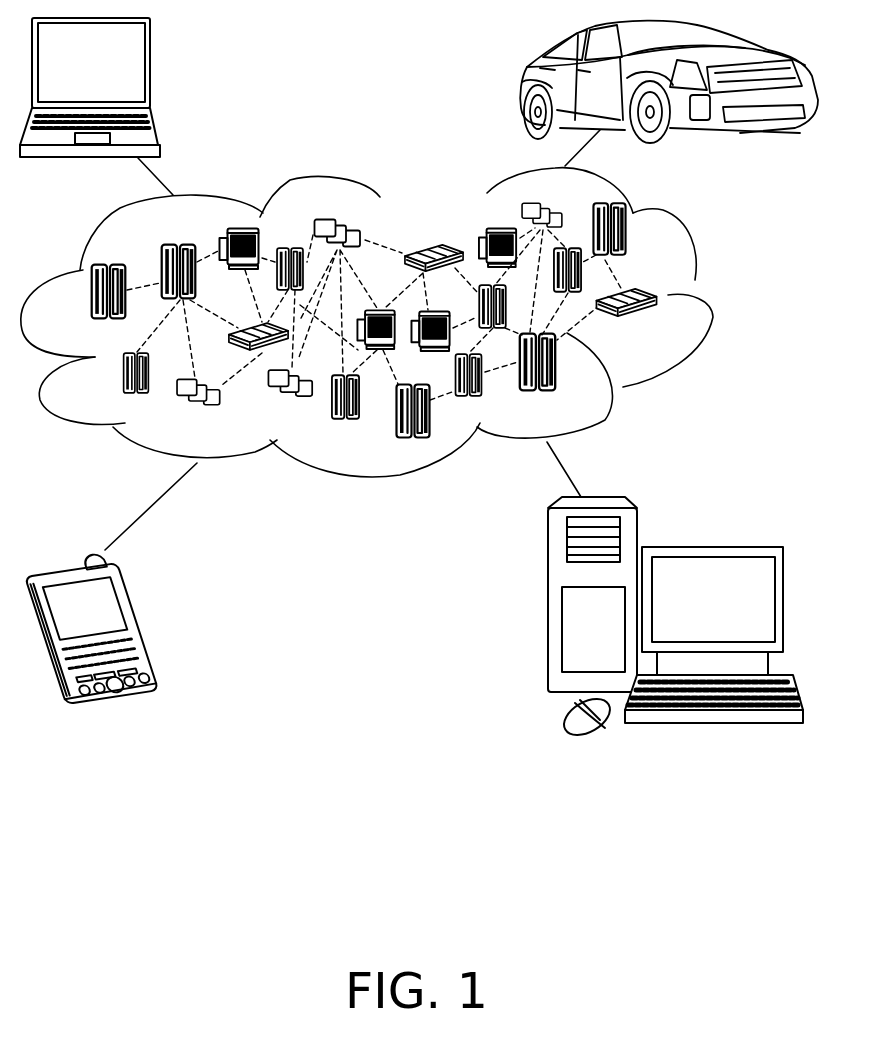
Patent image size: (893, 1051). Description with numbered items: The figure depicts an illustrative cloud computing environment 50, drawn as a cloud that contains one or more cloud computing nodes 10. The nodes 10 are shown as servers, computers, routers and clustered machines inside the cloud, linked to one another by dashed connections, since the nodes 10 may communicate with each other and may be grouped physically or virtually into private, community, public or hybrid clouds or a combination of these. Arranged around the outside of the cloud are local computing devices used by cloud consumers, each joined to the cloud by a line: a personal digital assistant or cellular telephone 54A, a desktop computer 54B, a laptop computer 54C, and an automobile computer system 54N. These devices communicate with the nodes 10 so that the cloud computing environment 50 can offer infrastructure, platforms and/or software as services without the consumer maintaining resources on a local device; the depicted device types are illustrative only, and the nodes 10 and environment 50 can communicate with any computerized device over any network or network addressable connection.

The cloud computing nodes 10 is at (670, 332).
The cloud computing environment 50 is at (711, 303).
The personal digital assistant or cellular telephone 54A is at (142, 625).
The desktop computer 54B is at (708, 545).
The laptop computer 54C is at (152, 70).
The automobile computer system 54N is at (522, 82).